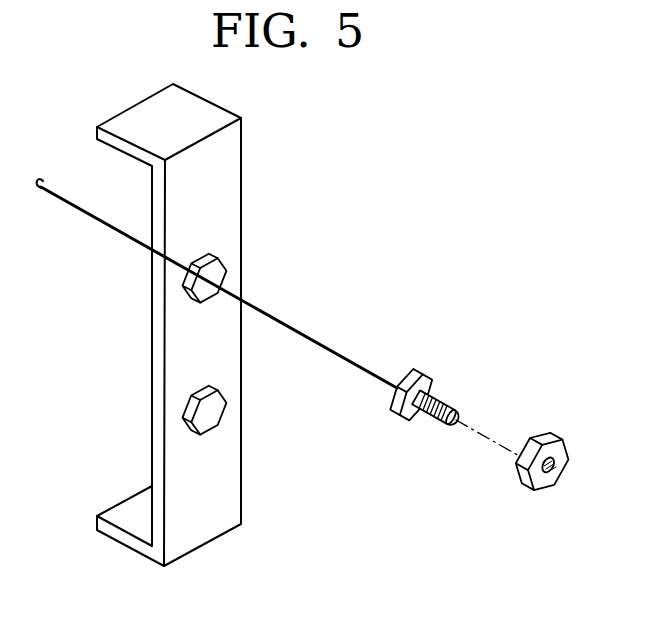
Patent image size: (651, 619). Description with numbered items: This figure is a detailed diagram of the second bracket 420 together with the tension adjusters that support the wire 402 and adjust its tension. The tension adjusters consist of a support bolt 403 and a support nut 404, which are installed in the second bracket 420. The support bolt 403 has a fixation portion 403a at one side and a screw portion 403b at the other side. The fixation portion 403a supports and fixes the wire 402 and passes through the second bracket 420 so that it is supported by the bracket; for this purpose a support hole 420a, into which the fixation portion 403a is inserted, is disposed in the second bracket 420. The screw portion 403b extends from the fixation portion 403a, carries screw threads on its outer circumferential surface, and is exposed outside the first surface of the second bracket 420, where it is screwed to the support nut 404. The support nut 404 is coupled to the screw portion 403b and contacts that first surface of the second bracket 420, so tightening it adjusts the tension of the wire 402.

The second bracket 420 is at (228, 168).
The support hole 420a is at (214, 403).
The wire 402 is at (295, 322).
The support bolt 403 is at (396, 470).
The fixation portion 403a is at (397, 420).
The screw portion 403b is at (432, 416).
The support nut 404 is at (541, 490).